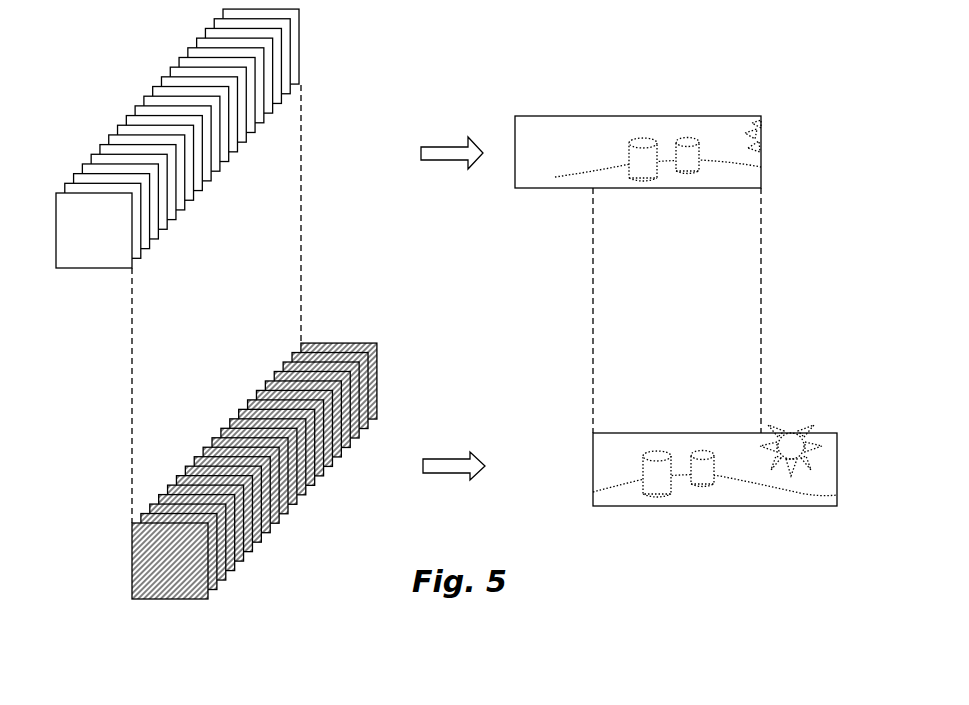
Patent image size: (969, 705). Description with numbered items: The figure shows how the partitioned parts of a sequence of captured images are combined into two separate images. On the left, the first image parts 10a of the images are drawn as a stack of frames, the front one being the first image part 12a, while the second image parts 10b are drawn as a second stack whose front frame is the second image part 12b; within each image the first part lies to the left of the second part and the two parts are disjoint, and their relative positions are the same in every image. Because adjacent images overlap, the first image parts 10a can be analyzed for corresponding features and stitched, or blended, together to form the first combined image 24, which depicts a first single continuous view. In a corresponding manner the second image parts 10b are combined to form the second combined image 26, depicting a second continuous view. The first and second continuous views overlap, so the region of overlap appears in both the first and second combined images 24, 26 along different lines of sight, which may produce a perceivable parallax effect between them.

The first image parts 10a is at (110, 76).
The first image part 12a is at (118, 238).
The second image parts 10b is at (347, 481).
The second image part 12b is at (194, 572).
The first combined image 24 is at (616, 115).
The second combined image 26 is at (698, 432).